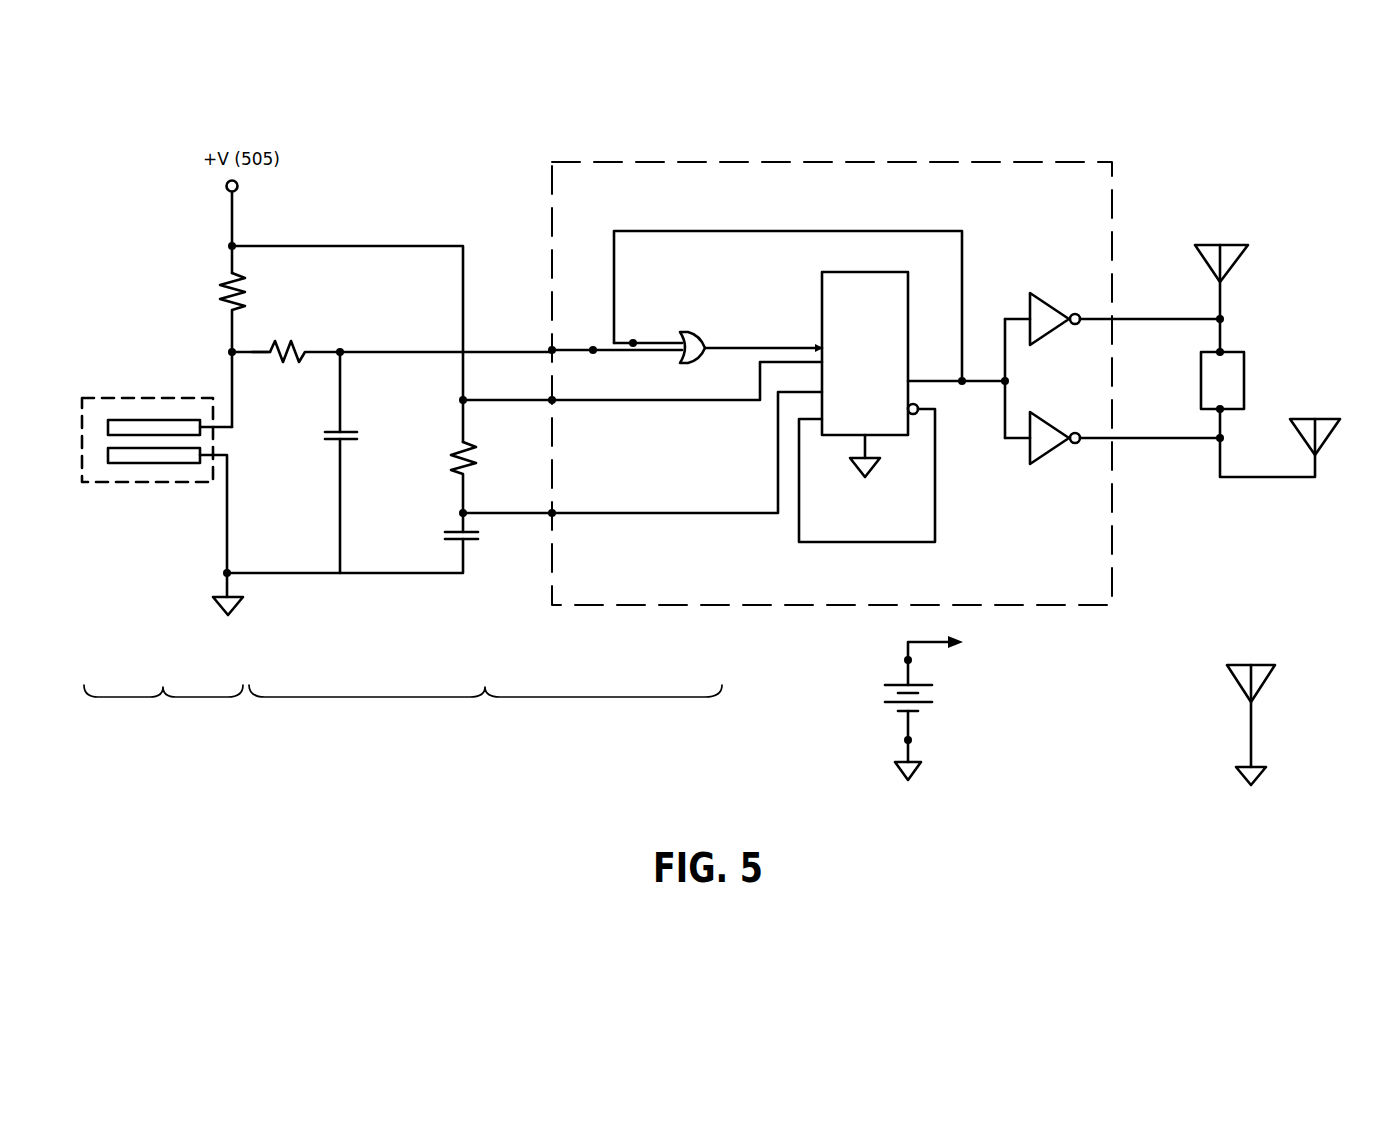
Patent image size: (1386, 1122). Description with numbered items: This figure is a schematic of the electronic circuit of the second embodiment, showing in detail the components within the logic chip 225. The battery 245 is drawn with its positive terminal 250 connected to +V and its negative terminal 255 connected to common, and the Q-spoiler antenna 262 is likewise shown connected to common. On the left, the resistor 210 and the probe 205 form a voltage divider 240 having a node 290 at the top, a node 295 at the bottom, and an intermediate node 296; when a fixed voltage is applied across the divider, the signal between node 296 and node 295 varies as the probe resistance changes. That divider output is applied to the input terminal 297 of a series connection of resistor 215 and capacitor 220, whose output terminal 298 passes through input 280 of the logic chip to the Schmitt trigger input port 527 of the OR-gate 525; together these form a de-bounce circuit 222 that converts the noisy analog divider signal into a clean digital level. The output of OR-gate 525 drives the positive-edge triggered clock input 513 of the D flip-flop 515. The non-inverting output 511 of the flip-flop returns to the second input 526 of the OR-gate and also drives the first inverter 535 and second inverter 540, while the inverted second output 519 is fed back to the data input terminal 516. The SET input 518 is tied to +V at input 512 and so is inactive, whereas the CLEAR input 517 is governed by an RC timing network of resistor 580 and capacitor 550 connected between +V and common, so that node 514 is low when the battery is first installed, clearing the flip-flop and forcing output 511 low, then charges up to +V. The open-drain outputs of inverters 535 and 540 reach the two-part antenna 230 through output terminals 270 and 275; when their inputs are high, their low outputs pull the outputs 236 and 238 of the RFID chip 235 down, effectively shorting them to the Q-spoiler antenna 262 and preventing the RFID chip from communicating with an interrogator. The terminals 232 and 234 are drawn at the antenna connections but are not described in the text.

The probe 205 is at (110, 482).
The resistor 210 is at (232, 295).
The resistor 215 is at (300, 345).
The capacitor 220 is at (350, 432).
The de-bounce circuit 222 is at (485, 697).
The logic chip 225 is at (1112, 192).
The two-part antenna 230 is at (1240, 260).
The node 232 is at (1220, 319).
The node 234 is at (1218, 442).
The RFID chip 235 is at (1244, 375).
The output of RFID chip 236 is at (1220, 352).
The output of RFID chip 238 is at (1222, 428).
The voltage divider 240 is at (163, 697).
The battery 245 is at (928, 702).
The positive terminal 250 is at (908, 660).
The negative terminal 255 is at (908, 740).
The Q-spoiler antenna 262 is at (1252, 712).
The output terminal 270 is at (1160, 319).
The output terminal 275 is at (1162, 438).
The input of logic chip 280 is at (552, 350).
The node 290 is at (232, 246).
The node 295 is at (227, 573).
The node 296 is at (232, 352).
The input terminal 297 is at (256, 354).
The output terminal 298 is at (370, 352).
The non-inverting output 511 is at (941, 381).
The input 512 is at (552, 400).
The clock input 513 is at (851, 346).
The node 514 is at (552, 513).
The D flip-flop 515 is at (877, 407).
The data input terminal 516 is at (867, 475).
The CLEAR input 517 is at (843, 396).
The SET input 518 is at (843, 369).
The second output 519 is at (893, 411).
The OR-gate 525 is at (695, 338).
The OR gate input 526 is at (633, 343).
The input port 527 is at (593, 350).
The first inverter 535 is at (1050, 333).
The second inverter 540 is at (1050, 448).
The capacitor 550 is at (478, 526).
The resistor 580 is at (470, 452).